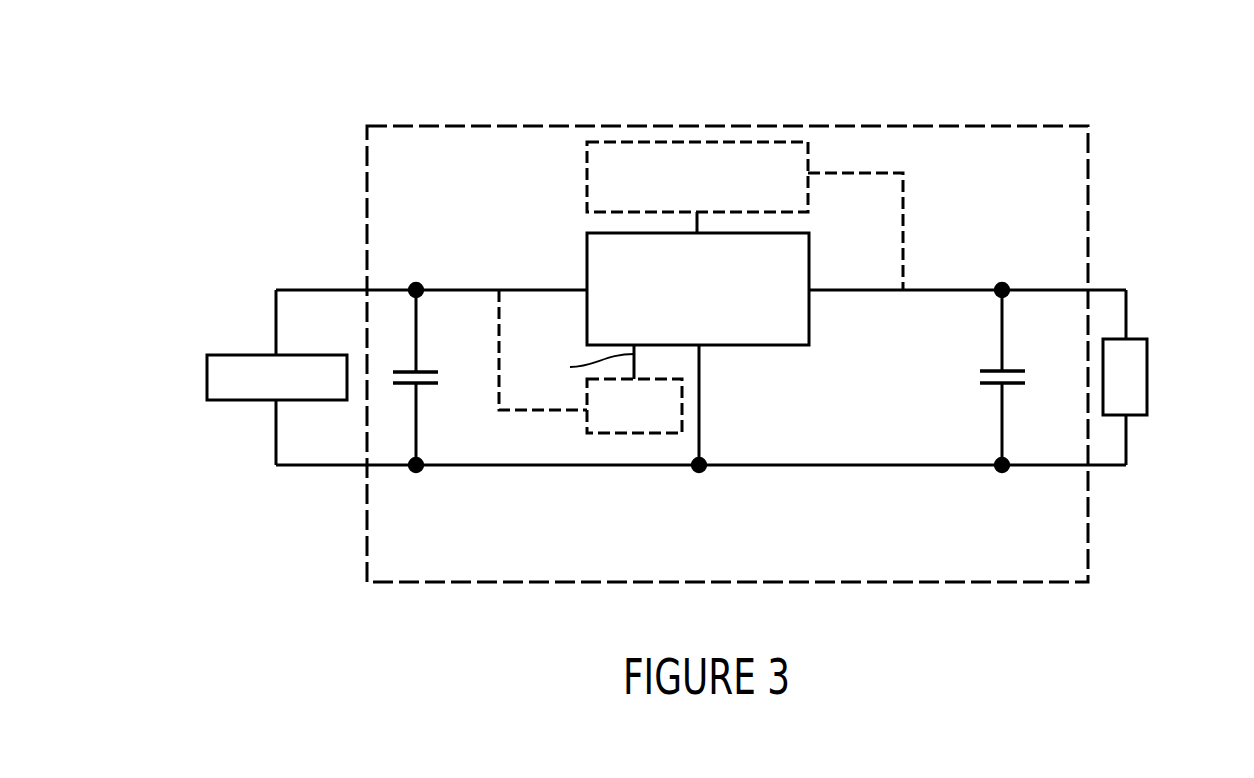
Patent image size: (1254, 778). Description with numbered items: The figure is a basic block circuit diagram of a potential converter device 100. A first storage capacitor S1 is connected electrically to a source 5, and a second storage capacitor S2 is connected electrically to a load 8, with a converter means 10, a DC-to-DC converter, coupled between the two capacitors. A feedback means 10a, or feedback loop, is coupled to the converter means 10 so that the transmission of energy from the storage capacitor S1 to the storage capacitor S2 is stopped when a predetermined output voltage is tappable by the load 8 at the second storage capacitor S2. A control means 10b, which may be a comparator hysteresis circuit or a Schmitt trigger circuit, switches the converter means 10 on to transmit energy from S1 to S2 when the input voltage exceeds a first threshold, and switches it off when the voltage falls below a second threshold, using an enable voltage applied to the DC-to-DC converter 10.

The potential converter device 100 is at (968, 102).
The source 5 is at (247, 355).
The load 8 is at (1147, 340).
The converter means 10 is at (811, 258).
The feedback means 10a is at (587, 187).
The control means 10b is at (587, 432).
The first storage capacitor S1 is at (430, 378).
The second storage capacitor S2 is at (986, 378).